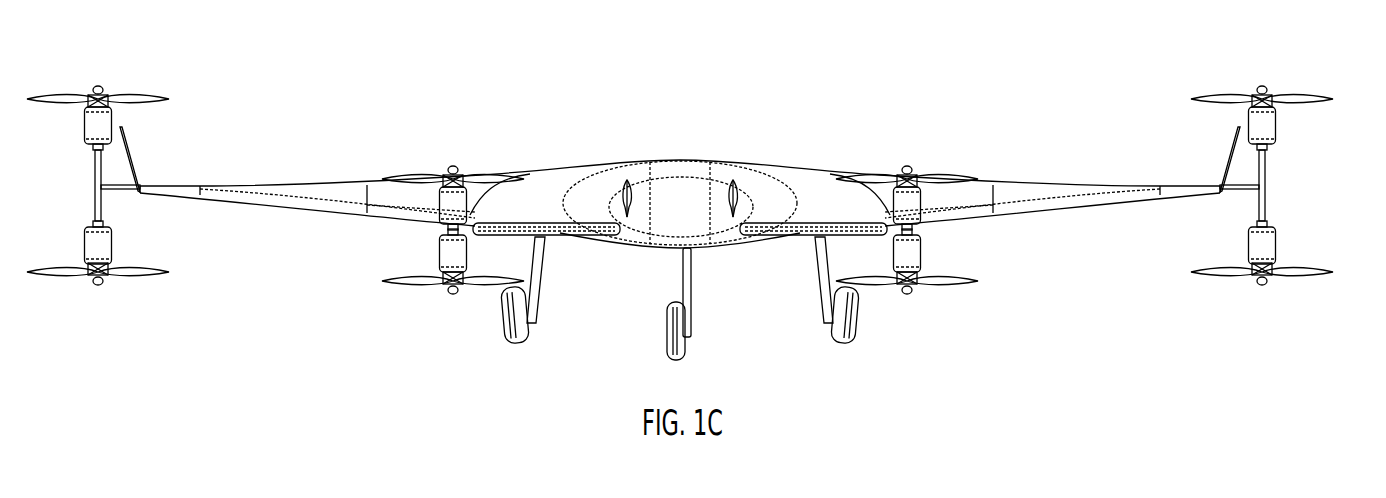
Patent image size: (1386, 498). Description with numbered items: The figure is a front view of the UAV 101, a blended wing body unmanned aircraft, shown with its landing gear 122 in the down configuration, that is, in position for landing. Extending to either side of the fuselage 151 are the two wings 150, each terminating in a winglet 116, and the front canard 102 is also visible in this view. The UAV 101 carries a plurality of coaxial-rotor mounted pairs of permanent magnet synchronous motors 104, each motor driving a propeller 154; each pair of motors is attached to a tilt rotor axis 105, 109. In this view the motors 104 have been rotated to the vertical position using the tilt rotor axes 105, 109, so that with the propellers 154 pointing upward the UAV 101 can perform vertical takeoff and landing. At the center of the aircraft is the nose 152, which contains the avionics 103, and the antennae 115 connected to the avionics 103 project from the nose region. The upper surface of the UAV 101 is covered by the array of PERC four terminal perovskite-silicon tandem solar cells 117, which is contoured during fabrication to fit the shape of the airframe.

The UAV 101 is at (360, 262).
The canard 102 is at (560, 235).
The avionics 103 is at (668, 250).
The permanent magnet synchronous motor 104 is at (85, 240).
The tilt rotor axis 105 is at (925, 228).
The tilt rotor axis 109 is at (1265, 187).
The antenna 115 is at (733, 210).
The winglet 116 is at (135, 158).
The PERC 4 terminal Perovskite-Silicon Tandem Solar Cell array 117 is at (686, 172).
The landing gear 122 is at (693, 335).
The wing 150 is at (288, 200).
The fuselage 151 is at (775, 165).
The nose 152 is at (693, 226).
The propeller 154 is at (140, 280).